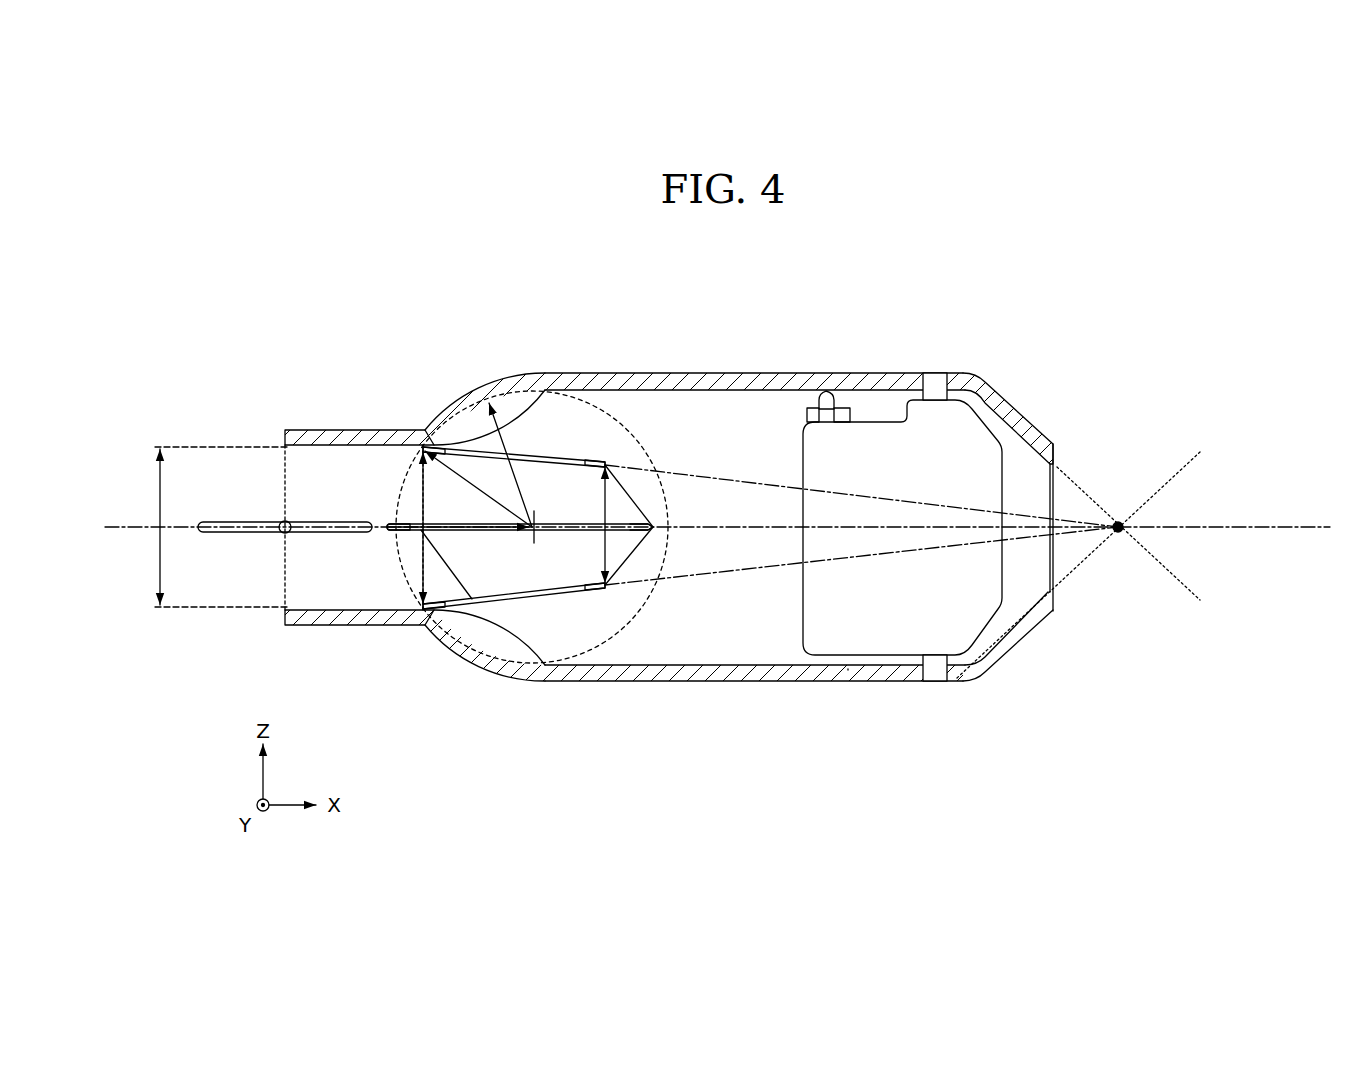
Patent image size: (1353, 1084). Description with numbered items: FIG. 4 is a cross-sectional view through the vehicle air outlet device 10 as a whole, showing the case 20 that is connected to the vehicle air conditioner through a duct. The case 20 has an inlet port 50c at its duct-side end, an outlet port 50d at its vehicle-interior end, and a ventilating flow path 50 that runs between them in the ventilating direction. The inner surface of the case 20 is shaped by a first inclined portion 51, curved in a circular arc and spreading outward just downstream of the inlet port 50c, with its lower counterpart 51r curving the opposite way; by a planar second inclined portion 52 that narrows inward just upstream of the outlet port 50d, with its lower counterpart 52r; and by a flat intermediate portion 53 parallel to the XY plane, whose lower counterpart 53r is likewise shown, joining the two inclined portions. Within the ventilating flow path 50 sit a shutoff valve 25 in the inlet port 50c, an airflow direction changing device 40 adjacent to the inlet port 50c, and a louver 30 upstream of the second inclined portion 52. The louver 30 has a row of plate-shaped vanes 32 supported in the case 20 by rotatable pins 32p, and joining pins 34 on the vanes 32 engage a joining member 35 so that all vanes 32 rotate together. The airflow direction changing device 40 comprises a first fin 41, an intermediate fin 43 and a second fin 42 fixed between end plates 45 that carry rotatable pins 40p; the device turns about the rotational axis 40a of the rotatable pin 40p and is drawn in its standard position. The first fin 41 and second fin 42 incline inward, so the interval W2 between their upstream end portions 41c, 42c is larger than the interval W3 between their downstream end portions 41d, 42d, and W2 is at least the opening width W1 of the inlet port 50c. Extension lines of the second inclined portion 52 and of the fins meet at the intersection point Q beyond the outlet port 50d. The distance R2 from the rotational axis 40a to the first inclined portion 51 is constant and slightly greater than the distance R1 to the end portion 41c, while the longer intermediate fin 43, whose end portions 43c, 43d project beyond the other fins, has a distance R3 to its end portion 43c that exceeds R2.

The optical device 10 is at (1034, 264).
The case 20 is at (652, 366).
The shutoff valve 25 is at (258, 534).
The louver 30 is at (848, 670).
The vane 32 is at (888, 630).
The rotatable pin 32p is at (935, 374).
The joining pin 34 is at (828, 392).
The joining member 35 is at (846, 409).
The airflow direction changing device 40 is at (490, 616).
The rotational axis 40a is at (530, 533).
The rotatable pin 40p is at (535, 532).
The first fin 41 is at (548, 459).
The end portion of the first fin in the −X direction 41c is at (423, 446).
The end portion of the first fin in the +X direction 41d is at (610, 464).
The second fin 42 is at (552, 603).
The end portion of the second fin in the −X direction 42c is at (420, 610).
The end portion of the second fin in the +X direction 42d is at (612, 592).
The intermediate fin 43 is at (630, 522).
The end portion of the intermediate fin in the −X direction 43c is at (385, 531).
The end portion of the intermediate fin in the +X direction 43d is at (660, 528).
The end plate 45 is at (638, 492).
The ventilating flow path 50 is at (776, 446).
The inlet port 50c is at (362, 503).
The outlet port 50d is at (1060, 492).
The first inclined portion 51 is at (463, 405).
The first inclined portion 51r is at (447, 642).
The second inclined portion 52 is at (1007, 432).
The second inclined portion 52r is at (1019, 607).
The intermediate portion 53 is at (732, 399).
The straight portion rear side 53r is at (701, 668).
The intersection point Q is at (1118, 533).
The opening width of the inlet port W1 is at (190, 527).
The interval W2 is at (420, 487).
The interval W3 is at (608, 553).
The distance R1 is at (478, 489).
The distance R2 is at (510, 462).
The distance R3 is at (458, 515).